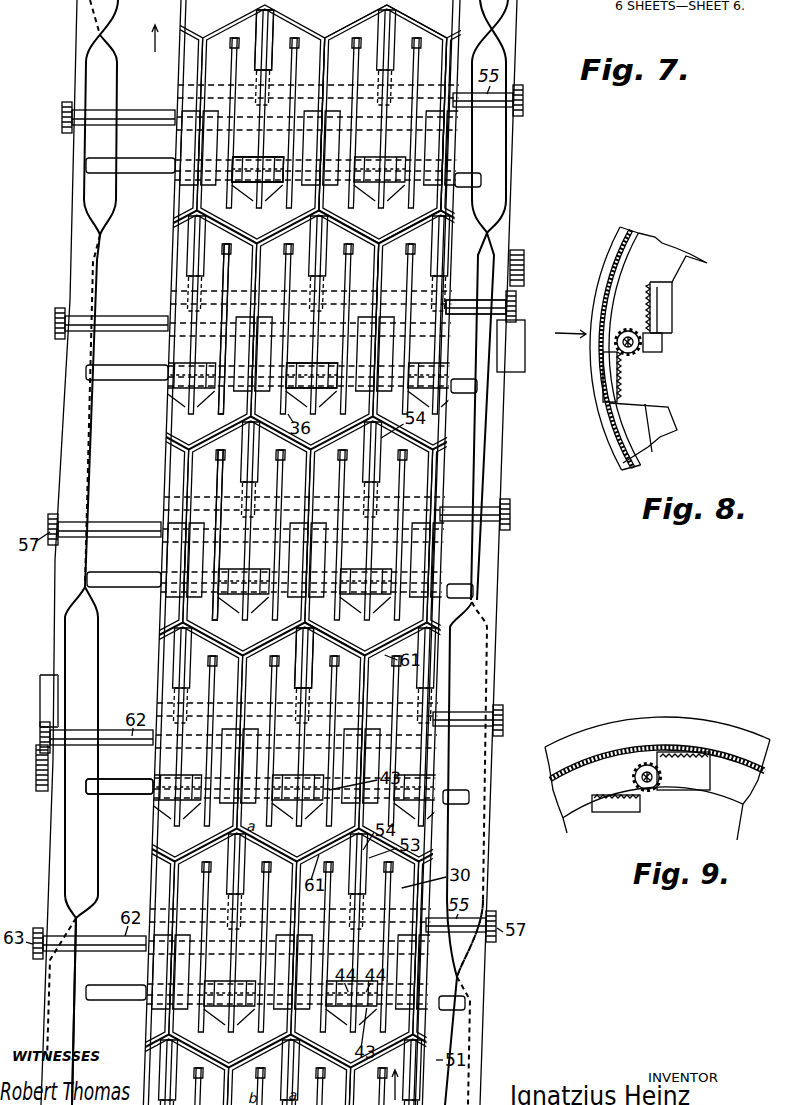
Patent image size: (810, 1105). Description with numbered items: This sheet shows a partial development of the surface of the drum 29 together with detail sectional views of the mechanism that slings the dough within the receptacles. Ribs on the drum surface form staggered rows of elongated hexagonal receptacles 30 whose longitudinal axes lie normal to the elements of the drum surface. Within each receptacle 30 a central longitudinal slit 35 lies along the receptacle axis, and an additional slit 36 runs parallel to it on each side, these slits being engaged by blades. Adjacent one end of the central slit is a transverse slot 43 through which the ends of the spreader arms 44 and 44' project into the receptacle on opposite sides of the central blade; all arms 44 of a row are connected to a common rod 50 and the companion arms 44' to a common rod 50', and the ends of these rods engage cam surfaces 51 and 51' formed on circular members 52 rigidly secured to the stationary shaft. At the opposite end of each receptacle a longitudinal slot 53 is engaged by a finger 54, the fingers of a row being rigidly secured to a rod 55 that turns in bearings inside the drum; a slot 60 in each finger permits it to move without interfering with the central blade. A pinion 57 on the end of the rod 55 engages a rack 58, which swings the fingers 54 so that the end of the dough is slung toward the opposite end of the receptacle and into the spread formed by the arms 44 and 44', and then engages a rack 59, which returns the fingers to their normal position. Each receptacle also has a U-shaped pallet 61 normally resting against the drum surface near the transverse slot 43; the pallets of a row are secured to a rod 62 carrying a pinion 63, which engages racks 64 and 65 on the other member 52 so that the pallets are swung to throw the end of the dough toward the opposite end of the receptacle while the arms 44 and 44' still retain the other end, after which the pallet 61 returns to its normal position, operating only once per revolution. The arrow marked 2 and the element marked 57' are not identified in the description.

In FIG. 8, the section line 2 is at (565, 333).
In FIG. 8, the drum 29 is at (637, 243).
In FIG. 9, the drum 29 is at (592, 736).
In FIG. 7, the receptacle 30 is at (411, 33).
In FIG. 7, the central longitudinal slit 35 is at (222, 416).
In FIG. 7, the additional slit 36 is at (231, 512).
In FIG. 7, the transverse slot 43 is at (342, 390).
In FIG. 7, the arm 44 is at (262, 160).
In FIG. 7, the arm 44' is at (258, 160).
In FIG. 7, the rod 50 is at (119, 795).
In FIG. 7, the rod 50' is at (119, 769).
In FIG. 7, the cam surface 51 is at (66, 552).
In FIG. 7, the cam surface 51' is at (489, 956).
In FIG. 8, the circular member 52 is at (684, 429).
In FIG. 9, the circular member 52 is at (575, 818).
In FIG. 7, the longitudinal slot 53 is at (355, 650).
In FIG. 7, the finger 54 is at (283, 24).
In FIG. 7, the rod 55 is at (462, 300).
In FIG. 9, the rod 55 is at (632, 777).
In FIG. 7, the pinion 57 is at (534, 306).
In FIG. 9, the pinion 57 is at (660, 792).
In FIG. 7, the chain portion 57' is at (93, 1011).
In FIG. 7, the rack 58 is at (525, 268).
In FIG. 9, the rack 58 is at (620, 804).
In FIG. 7, the rack 59 is at (526, 352).
In FIG. 9, the rack 59 is at (676, 752).
In FIG. 7, the slot 60 is at (317, 672).
In FIG. 7, the pallet 61 is at (385, 262).
In FIG. 7, the rod 62 is at (487, 508).
In FIG. 8, the rod 62 is at (627, 356).
In FIG. 7, the pinion 63 is at (40, 742).
In FIG. 8, the pinion 63 is at (638, 350).
In FIG. 7, the rack 64 is at (42, 676).
In FIG. 8, the rack 64 is at (612, 392).
In FIG. 7, the rack 65 is at (36, 782).
In FIG. 8, the rack 65 is at (655, 313).